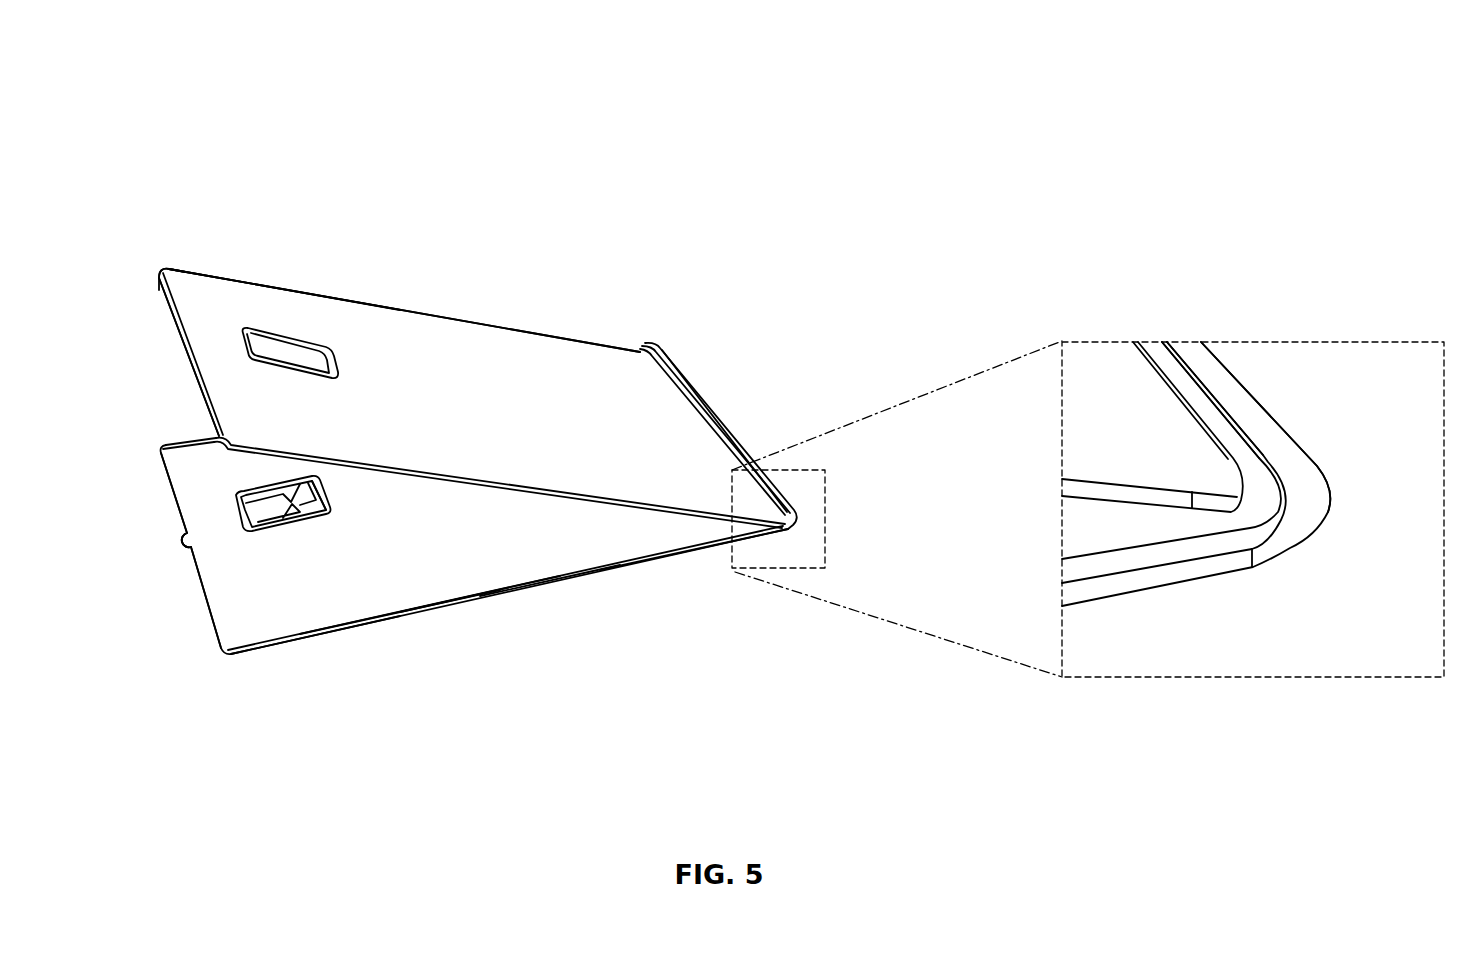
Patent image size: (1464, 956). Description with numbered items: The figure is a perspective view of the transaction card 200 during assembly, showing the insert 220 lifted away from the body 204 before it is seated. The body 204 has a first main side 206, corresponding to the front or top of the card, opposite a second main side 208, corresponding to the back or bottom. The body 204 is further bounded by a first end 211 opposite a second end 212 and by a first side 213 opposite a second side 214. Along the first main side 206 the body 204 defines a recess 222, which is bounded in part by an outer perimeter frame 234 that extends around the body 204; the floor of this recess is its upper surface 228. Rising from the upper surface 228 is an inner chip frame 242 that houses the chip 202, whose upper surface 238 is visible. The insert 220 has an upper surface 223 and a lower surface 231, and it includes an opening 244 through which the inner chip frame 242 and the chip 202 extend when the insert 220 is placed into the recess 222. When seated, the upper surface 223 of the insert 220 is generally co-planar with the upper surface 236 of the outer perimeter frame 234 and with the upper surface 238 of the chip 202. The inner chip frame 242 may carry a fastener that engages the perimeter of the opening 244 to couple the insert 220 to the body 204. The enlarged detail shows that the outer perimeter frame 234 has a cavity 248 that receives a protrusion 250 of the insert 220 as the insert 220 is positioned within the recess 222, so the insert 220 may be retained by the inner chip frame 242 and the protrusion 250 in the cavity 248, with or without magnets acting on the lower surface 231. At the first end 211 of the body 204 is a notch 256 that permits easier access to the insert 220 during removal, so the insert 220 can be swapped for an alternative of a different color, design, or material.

The transaction card 200 is at (221, 92).
The chip 202 is at (258, 534).
The body 204 is at (288, 657).
The first main side 206 is at (439, 328).
The second main side 208 is at (399, 618).
The first end 211 is at (197, 613).
The second end 212 is at (732, 421).
The first side 213 is at (543, 598).
The second side 214 is at (177, 424).
The insert 220 is at (547, 362).
The recess 222 is at (344, 585).
The upper surface of the insert 223 is at (203, 286).
The upper surface of the recess 228 is at (441, 581).
The lower surface of the insert 231 is at (159, 284).
The outer perimeter frame 234 is at (656, 560).
The upper surface of the outer perimeter frame 236 is at (680, 368).
The upper surface of the chip 238 is at (306, 520).
The inner chip frame 242 is at (330, 502).
The opening of the insert 244 is at (292, 346).
The cavity 248 is at (1240, 440).
The protrusion 250 is at (1172, 378).
The notch 256 is at (170, 544).